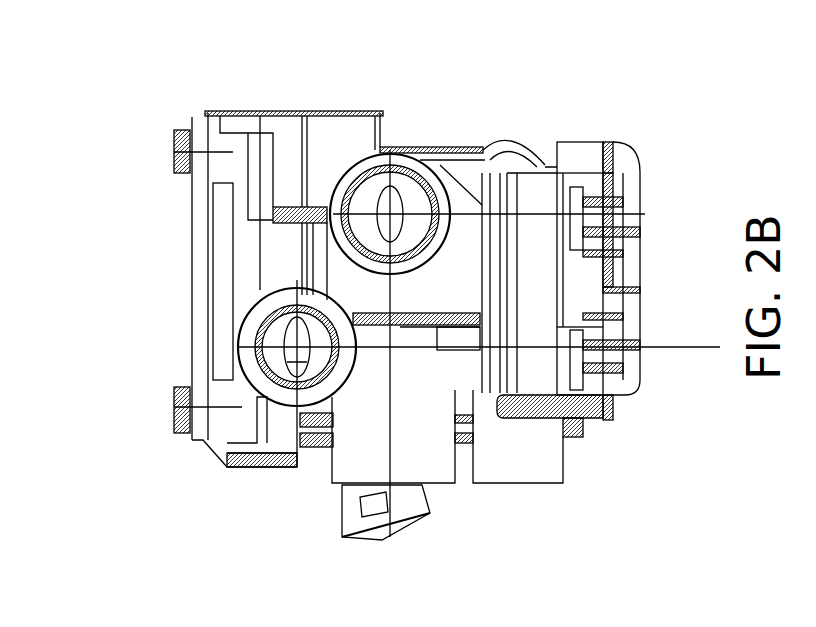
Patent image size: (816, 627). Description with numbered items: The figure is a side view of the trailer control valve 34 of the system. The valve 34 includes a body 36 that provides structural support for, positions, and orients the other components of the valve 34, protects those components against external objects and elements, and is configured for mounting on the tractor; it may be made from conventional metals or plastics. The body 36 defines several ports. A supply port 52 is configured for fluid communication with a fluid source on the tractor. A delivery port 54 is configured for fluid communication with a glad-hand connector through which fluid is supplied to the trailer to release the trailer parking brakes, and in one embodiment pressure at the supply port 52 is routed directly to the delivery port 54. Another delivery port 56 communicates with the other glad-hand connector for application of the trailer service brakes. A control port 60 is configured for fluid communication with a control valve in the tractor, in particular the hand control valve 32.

The valve 34 is at (148, 402).
The body 36 is at (197, 222).
The delivery port 54 is at (417, 145).
The delivery port 56 is at (307, 397).
The supply port 52 is at (440, 432).
The control port 60 is at (553, 443).
The hand control valve 32 is at (340, 490).